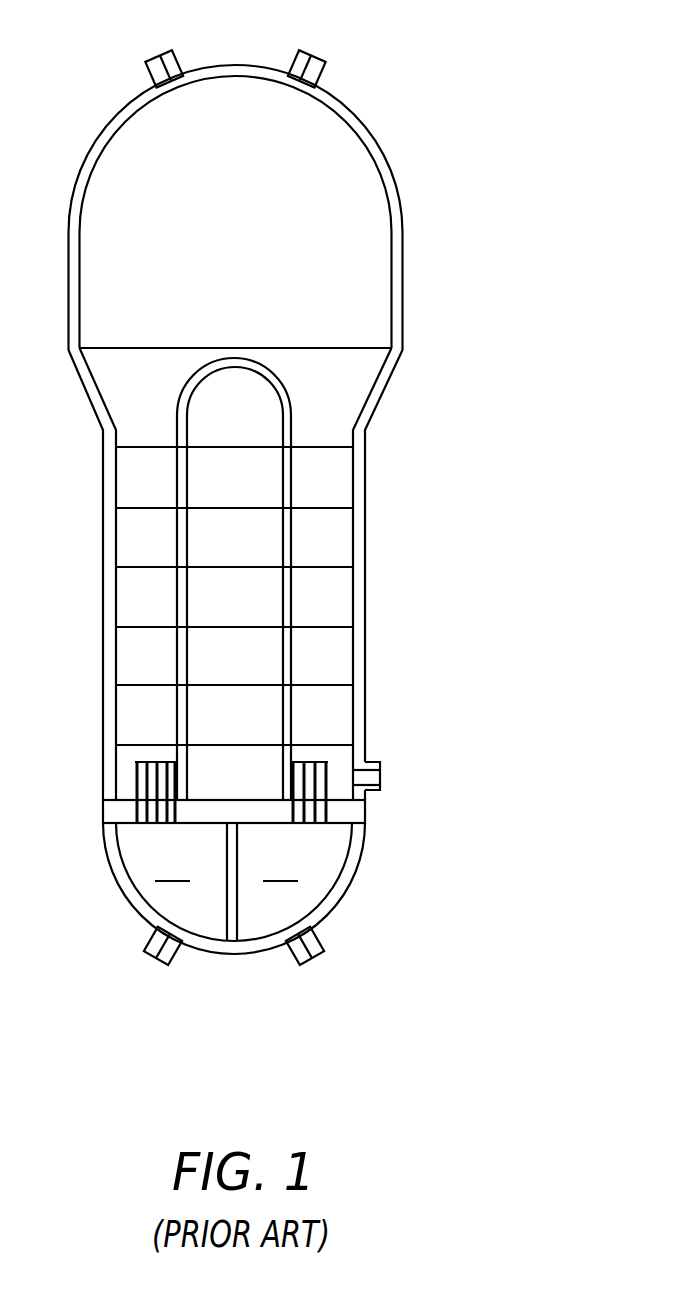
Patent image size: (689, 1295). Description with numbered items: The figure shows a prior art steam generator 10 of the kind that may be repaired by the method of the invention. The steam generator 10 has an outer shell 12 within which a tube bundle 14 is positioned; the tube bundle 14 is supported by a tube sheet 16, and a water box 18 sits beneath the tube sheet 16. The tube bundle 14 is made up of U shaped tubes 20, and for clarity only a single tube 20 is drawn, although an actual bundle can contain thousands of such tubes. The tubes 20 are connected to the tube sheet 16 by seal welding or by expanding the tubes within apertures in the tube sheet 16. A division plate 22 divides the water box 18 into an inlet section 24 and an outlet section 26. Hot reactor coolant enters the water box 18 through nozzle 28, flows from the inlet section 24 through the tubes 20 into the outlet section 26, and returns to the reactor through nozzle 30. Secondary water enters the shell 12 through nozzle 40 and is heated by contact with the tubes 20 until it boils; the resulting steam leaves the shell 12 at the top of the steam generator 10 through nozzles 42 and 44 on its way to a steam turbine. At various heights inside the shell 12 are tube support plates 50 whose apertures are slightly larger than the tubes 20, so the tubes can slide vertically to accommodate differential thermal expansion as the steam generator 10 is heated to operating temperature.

The steam generator 10 is at (302, 207).
The shell 12 is at (259, 574).
The tube bundle 14 is at (286, 749).
The tube sheet 16 is at (279, 823).
The water box 18 is at (270, 888).
The U shaped tube 20 is at (311, 579).
The division plate 22 is at (262, 922).
The inlet section 24 is at (280, 865).
The outlet section 26 is at (172, 865).
The nozzle 28 is at (333, 974).
The nozzle 30 is at (132, 965).
The nozzle 40 is at (399, 765).
The nozzle 42 is at (126, 47).
The nozzle 44 is at (342, 44).
The tube support plate 50 is at (190, 597).